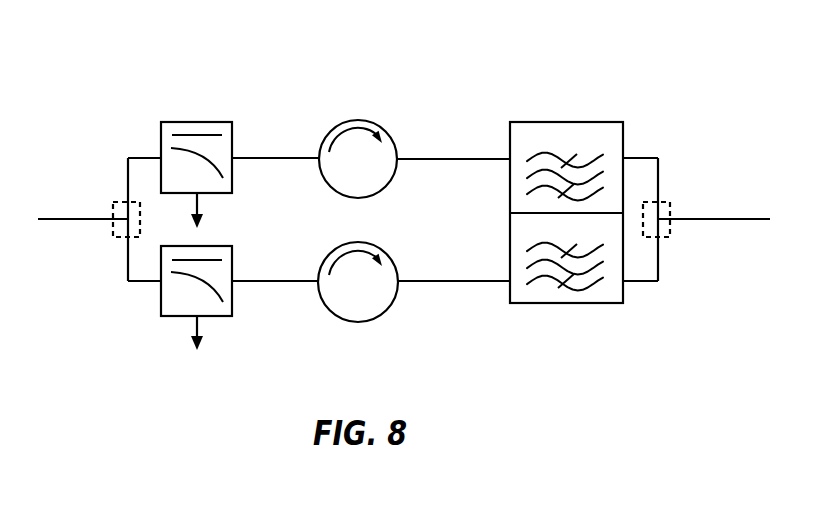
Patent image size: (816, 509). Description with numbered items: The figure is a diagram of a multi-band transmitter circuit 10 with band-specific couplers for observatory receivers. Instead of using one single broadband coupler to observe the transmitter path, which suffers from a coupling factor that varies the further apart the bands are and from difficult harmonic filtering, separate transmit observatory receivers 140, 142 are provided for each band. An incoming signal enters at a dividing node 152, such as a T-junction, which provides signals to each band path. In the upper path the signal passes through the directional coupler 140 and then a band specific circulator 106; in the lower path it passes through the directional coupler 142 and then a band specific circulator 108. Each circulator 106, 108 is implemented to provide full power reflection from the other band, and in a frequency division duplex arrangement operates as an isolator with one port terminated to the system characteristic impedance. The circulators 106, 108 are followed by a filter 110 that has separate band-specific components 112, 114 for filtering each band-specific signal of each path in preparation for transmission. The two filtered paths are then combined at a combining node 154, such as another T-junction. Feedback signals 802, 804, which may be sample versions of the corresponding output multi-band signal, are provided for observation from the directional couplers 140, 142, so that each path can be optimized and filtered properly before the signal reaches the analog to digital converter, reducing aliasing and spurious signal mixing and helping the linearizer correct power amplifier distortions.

The multi-band transmitter circuit 10 is at (178, 58).
The band specific circulator 106 is at (373, 181).
The band specific circulator 108 is at (373, 304).
The filter 110 is at (600, 120).
The band-specific component 112 is at (614, 148).
The band-specific component 114 is at (614, 240).
The transmit observatory receiver 140 is at (213, 189).
The transmit observatory receiver 142 is at (215, 311).
The dividing node 152 is at (113, 204).
The combining node 154 is at (670, 205).
The feedback signal 802 is at (217, 210).
The feedback signal 804 is at (215, 338).